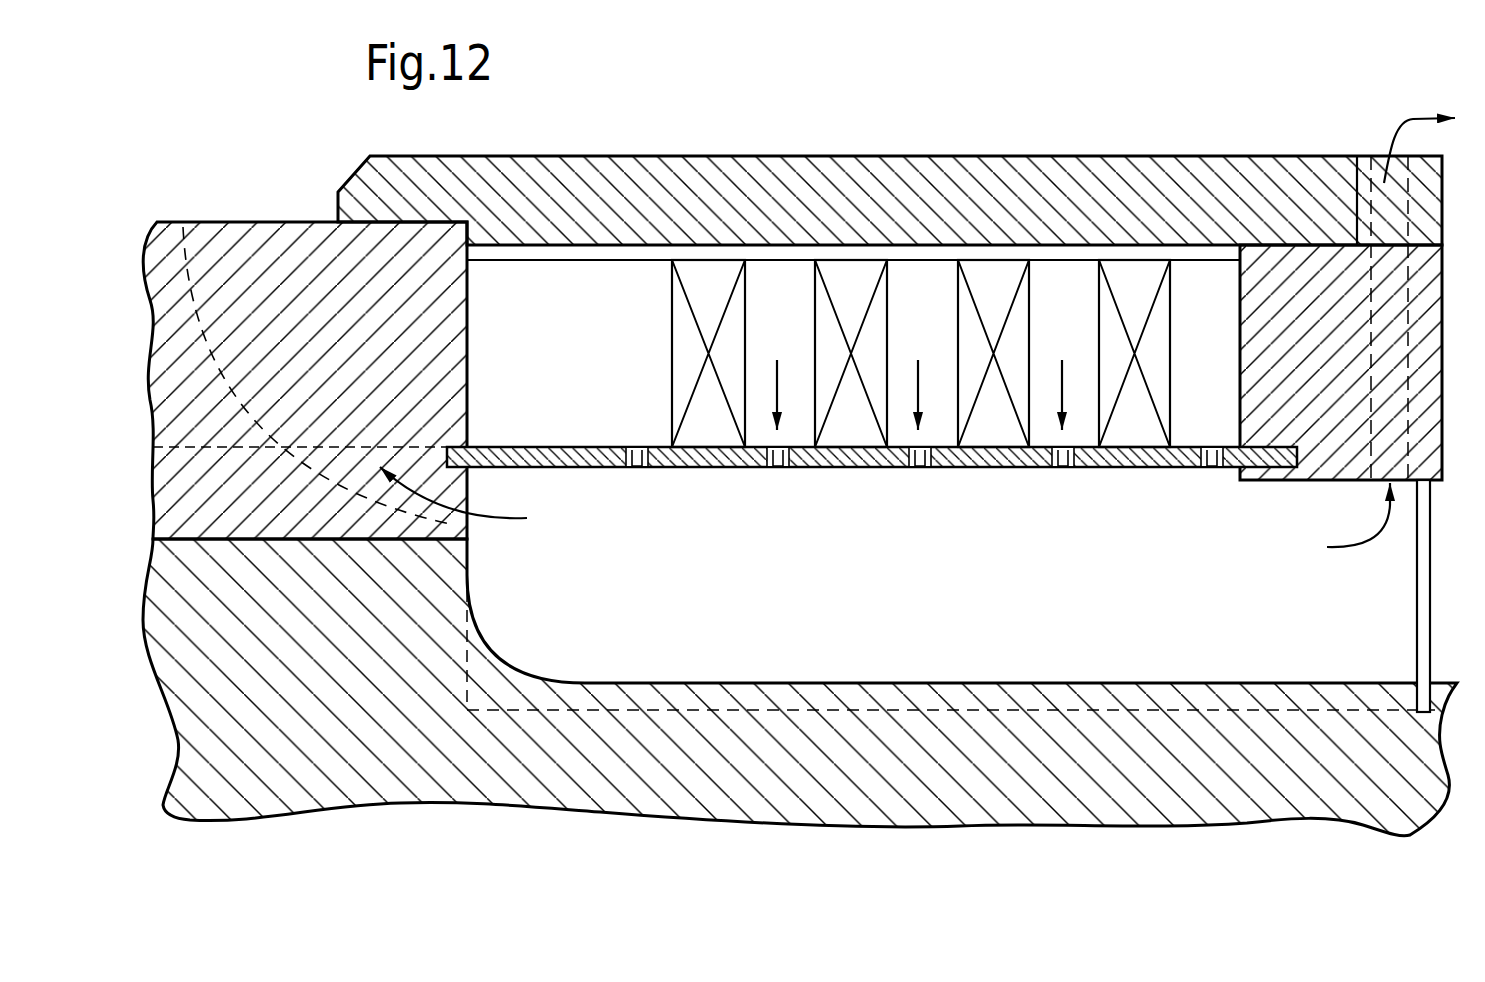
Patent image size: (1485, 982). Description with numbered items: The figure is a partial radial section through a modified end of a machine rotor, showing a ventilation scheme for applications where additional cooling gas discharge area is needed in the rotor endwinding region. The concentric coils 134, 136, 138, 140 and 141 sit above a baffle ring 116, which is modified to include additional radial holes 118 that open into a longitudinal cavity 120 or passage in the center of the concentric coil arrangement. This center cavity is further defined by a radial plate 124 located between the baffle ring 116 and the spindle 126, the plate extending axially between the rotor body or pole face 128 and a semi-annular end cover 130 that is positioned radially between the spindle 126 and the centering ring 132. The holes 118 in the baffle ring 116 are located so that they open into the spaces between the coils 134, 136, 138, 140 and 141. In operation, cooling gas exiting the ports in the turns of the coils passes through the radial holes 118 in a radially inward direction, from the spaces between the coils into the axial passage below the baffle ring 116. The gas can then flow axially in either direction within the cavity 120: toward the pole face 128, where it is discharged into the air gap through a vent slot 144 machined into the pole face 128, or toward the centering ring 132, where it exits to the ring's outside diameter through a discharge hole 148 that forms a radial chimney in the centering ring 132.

The baffle ring 116 is at (893, 460).
The holes 118 is at (637, 447).
The longitudinal cavity 120 is at (585, 523).
The radial plate 124 is at (1385, 628).
The spindle 126 is at (1168, 796).
The pole face 128 is at (468, 352).
The semi-annular end cover 130 is at (1425, 543).
The centering ring 132 is at (1420, 376).
The coil 134 is at (668, 323).
The coil 136 is at (810, 315).
The coil 138 is at (953, 323).
The coil 140 is at (1095, 313).
The coil 141 is at (1218, 290).
The vent slot 144 is at (290, 237).
The discharge hole 148 is at (1387, 294).